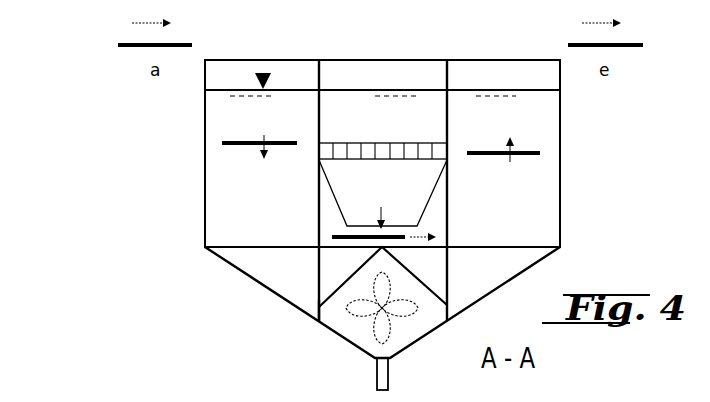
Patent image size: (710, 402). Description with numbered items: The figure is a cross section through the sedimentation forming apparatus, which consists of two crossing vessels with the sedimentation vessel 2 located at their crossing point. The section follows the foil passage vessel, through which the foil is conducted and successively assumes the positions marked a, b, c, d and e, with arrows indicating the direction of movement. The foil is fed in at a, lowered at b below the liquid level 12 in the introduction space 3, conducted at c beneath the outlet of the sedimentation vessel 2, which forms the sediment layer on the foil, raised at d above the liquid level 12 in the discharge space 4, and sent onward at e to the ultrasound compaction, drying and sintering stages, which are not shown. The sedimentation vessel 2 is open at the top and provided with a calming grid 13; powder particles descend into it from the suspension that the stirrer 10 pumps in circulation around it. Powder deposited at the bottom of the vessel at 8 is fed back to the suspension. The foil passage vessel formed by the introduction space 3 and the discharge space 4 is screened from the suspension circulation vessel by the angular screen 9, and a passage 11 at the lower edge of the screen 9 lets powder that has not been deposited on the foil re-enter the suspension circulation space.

The sedimentation vessel 2 is at (378, 150).
The introduction space 3 is at (228, 195).
The discharge space 4 is at (540, 191).
The vessel bottom 8 is at (373, 357).
The angular screen 9 is at (340, 288).
The stirrer 10 is at (388, 312).
The passage 11 is at (313, 311).
The liquid level 12 is at (269, 78).
The calming grid 13 is at (411, 150).